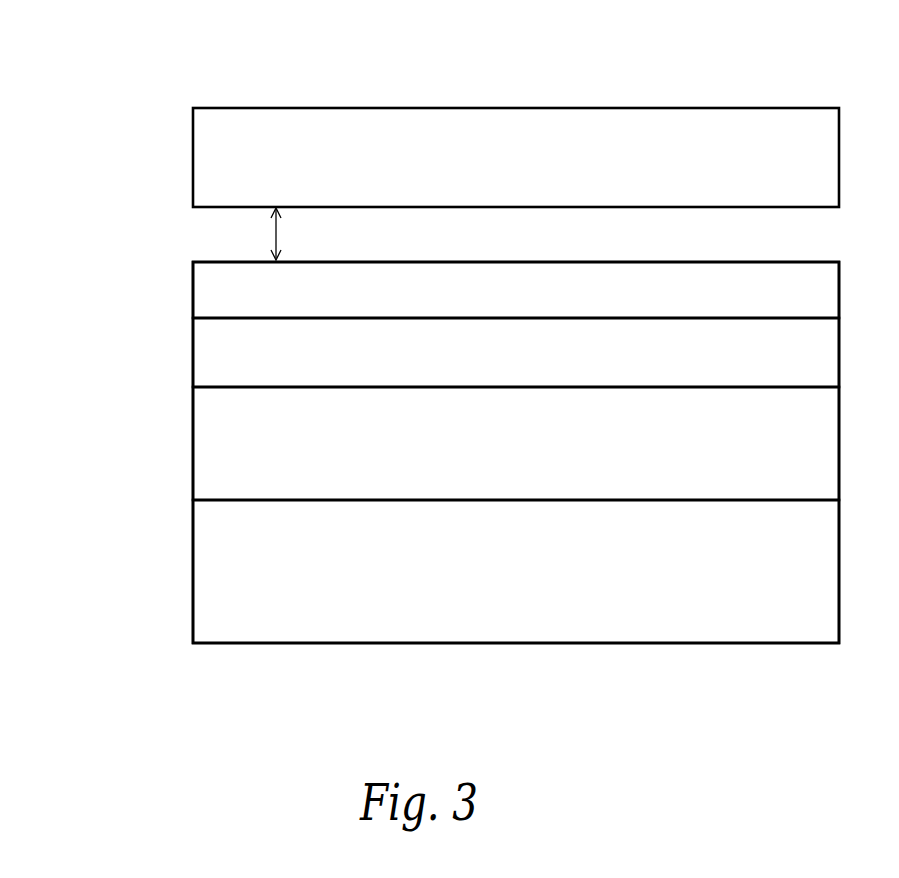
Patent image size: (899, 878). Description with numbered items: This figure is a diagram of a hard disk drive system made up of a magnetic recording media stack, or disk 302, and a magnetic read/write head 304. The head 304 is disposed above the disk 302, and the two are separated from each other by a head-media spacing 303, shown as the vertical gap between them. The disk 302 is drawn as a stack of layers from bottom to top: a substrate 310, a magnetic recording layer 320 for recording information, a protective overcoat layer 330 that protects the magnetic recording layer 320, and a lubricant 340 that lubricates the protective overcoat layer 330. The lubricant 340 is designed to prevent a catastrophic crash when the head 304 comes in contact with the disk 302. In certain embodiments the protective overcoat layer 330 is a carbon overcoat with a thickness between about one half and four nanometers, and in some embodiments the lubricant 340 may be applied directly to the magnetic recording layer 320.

The magnetic read/write head 304 is at (162, 92).
The head-media spacing 303 is at (277, 237).
The magnetic recording media stack 302 is at (74, 259).
The lubricant 340 is at (219, 292).
The protective overcoat layer 330 is at (219, 357).
The magnetic recording layer 320 is at (219, 457).
The substrate 310 is at (219, 581).